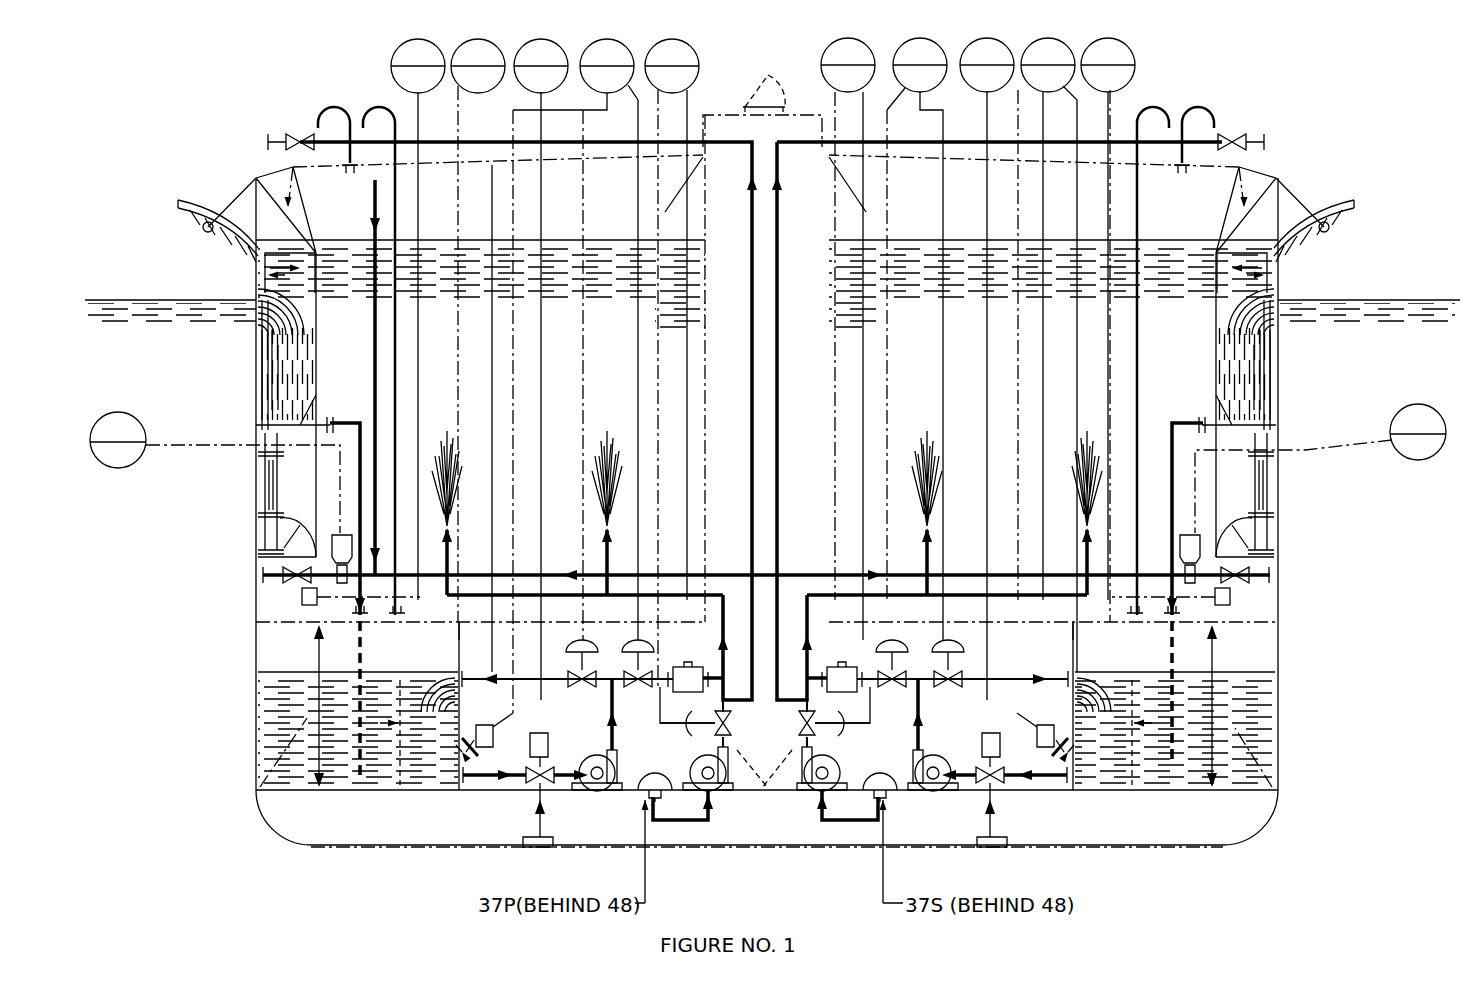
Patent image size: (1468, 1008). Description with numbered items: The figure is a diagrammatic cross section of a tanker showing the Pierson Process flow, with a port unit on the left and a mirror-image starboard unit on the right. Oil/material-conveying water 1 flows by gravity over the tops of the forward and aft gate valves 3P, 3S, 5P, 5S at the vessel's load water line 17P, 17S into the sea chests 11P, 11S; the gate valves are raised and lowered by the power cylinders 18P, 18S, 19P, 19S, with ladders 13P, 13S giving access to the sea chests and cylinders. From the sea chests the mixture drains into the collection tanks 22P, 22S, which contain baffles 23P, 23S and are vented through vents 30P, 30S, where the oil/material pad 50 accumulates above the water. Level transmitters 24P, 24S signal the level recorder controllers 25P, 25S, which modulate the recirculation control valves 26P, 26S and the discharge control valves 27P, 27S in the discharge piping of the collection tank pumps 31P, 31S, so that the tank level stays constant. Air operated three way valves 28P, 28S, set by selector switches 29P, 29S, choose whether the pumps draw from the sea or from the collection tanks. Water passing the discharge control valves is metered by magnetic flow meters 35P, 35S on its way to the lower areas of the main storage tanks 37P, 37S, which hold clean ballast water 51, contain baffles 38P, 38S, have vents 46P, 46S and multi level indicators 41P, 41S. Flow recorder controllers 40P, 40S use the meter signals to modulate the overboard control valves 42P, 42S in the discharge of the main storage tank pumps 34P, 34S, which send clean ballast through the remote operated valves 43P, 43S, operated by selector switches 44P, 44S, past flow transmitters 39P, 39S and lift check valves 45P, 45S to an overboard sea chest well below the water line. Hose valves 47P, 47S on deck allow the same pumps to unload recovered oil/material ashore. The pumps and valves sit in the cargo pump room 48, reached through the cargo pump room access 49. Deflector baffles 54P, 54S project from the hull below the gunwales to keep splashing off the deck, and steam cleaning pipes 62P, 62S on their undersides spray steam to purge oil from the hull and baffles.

The oil/material-conveying water 1 is at (312, 317).
The gate valve forward 3P is at (250, 352).
The gate valve forward 3S is at (1284, 352).
The gate valve aft 5P is at (189, 365).
The gate valve aft 5S is at (1337, 365).
The sea chest 11P is at (262, 300).
The sea chest 11S is at (1270, 300).
The ladder-access and passage sea chest and power cylinders 13P is at (292, 527).
The ladder-access and passage sea chest and power cylinders 13S is at (1240, 527).
The load water line-vessel 17P is at (175, 292).
The load water line-vessel 17S is at (1355, 292).
The power cylinders-gate valve forward 18P is at (252, 505).
The power cylinders-gate valve forward 18S is at (1284, 505).
The power cylinders-gate valve aft 19P is at (206, 497).
The power cylinders-gate valve aft 19S is at (1321, 497).
The collection tank 22P is at (316, 652).
The collection tank 22S is at (1215, 652).
The baffle-collection tank 23P is at (307, 720).
The baffle-collection tank 23S is at (1235, 728).
The level transmitter-collection tank 24P is at (467, 792).
The level transmitter-collection tank 24S is at (1057, 775).
The level recorder controller collection tank 25P is at (607, 66).
The level recorder controller collection tank 25S is at (920, 65).
The control valve-collection tank recirculation 26P is at (582, 674).
The control valve-collection tank recirculation 26S is at (949, 674).
The control valve-discharge to main storage tank 27P is at (641, 674).
The control valve-discharge to main storage tank 27S is at (894, 674).
The three way valve-air operated 28P is at (540, 847).
The three way valve-air operated 28S is at (990, 847).
The selector switch-three way valve collection tank/sea 29P is at (541, 66).
The selector switch-three way valve collection tank/sea 29S is at (987, 65).
The vent-collection tank 30P is at (372, 100).
The vent-collection tank 30S is at (1160, 100).
The pump-collection tank 31P is at (597, 790).
The pump-collection tank 31S is at (933, 790).
The pump-main storage tanks 34P is at (708, 820).
The pump-main storage tanks 34S is at (822, 820).
The magnetic flow meter 35P is at (695, 685).
The magnetic flow meter 35S is at (835, 685).
The tanks-main storage No. 1 37P is at (293, 167).
The tanks-main storage No. 1 37S is at (1243, 167).
The baffle-main storage tank 38P is at (475, 320).
The baffle-main storage tank 38S is at (1042, 320).
The transmitter-flow overboard discharge 39P is at (215, 472).
The transmitter-flow overboard discharge 39S is at (1320, 468).
The flow recorder-controller 40P is at (672, 66).
The flow recorder-controller 40S is at (848, 65).
The multi level indicator No. 1 main storage tanks 41P is at (478, 66).
The multi level indicator No. 1 main storage tanks 41S is at (1048, 65).
The control valve-overboard discharge 42P is at (743, 741).
The control valve-overboard discharge 42S is at (793, 741).
The remote operated valve-overboard discharge open-close 43P is at (296, 600).
The remote operated valve-overboard discharge open-close 43S is at (1236, 600).
The selector switch-remote operated valve-open-close 44P is at (418, 66).
The selector switch-remote operated valve-open-close 44S is at (1108, 65).
The valve-lift check 45P is at (283, 586).
The valve-lift check 45S is at (1250, 586).
The vent-No. 1 main storage tanks 46P is at (332, 100).
The vent-No. 1 main storage tanks 46S is at (1205, 100).
The hose valve-O/M to land storage tanks 47P is at (300, 130).
The hose valve-O/M to land storage tanks 47S is at (1235, 130).
The cargo pump room No. 1 48 is at (980, 660).
The cargo pump room access 49 is at (733, 110).
The oil/material pad 50 is at (372, 250).
The clean ballast water 51 is at (373, 377).
The deflector baffle-vessel 54P is at (172, 207).
The deflector baffle-vessel 54S is at (1360, 207).
The steam cleaning pipe 62P is at (200, 230).
The steam cleaning pipe 62S is at (1335, 230).